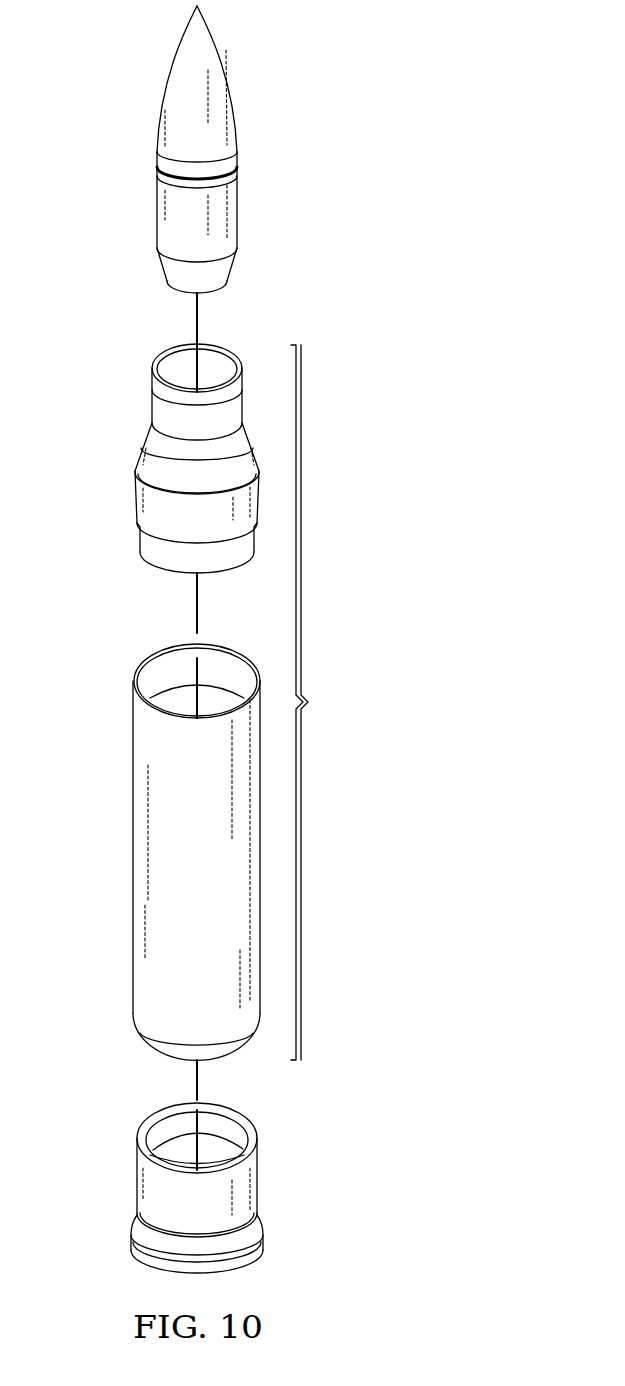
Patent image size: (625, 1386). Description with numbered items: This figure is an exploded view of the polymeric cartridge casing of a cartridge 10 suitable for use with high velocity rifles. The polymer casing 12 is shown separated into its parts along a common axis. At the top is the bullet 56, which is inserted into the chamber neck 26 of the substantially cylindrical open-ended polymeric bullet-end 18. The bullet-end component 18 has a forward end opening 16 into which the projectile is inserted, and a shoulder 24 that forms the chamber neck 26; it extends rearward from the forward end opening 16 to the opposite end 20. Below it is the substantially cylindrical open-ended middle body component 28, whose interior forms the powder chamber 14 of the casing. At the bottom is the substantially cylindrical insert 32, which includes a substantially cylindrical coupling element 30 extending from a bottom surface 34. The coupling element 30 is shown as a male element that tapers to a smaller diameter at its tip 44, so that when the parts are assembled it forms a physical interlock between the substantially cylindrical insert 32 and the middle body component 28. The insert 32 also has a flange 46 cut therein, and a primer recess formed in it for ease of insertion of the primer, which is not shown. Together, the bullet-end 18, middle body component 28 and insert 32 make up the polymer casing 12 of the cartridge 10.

The cartridge 10 is at (438, 224).
The polymer casing 12 is at (201, 782).
The powder chamber 14 is at (223, 668).
The forward end opening 16 is at (217, 356).
The bullet-end component 18 is at (133, 503).
The opposite end 20 is at (244, 1046).
The shoulder 24 is at (143, 450).
The chamber neck 26 is at (156, 405).
The middle body component 28 is at (131, 848).
The coupling element 30 is at (254, 1173).
The substantially cylindrical insert 32 is at (134, 1177).
The bottom surface 34 is at (187, 1160).
The tip 44 is at (258, 1127).
The flange 46 is at (259, 1227).
The bullet 56 is at (232, 205).